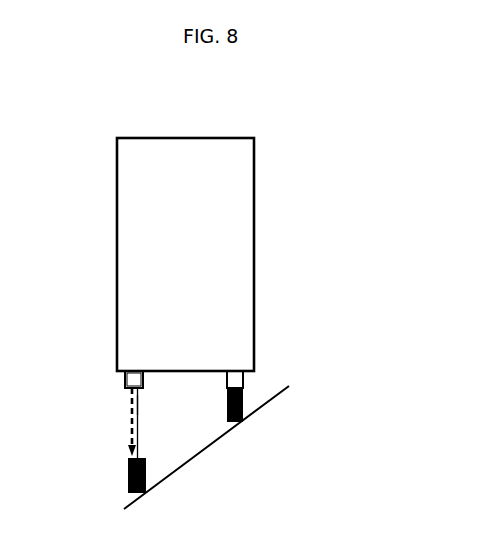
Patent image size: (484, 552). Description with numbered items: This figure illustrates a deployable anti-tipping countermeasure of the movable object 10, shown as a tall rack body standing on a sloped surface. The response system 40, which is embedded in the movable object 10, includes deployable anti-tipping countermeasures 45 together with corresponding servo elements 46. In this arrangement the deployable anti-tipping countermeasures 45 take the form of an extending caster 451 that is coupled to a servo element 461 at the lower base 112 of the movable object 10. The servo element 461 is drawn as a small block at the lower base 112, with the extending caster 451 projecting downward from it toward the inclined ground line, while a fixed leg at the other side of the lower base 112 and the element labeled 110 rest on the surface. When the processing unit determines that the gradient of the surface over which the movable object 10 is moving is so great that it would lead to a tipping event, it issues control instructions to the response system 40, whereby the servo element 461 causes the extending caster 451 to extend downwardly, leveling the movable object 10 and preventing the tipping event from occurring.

The movable object 10 is at (254, 240).
The servo element 46 is at (118, 380).
The servo element 461 is at (137, 372).
The lower base 112 is at (189, 371).
The response system 40 is at (117, 402).
The deployable anti-tipping countermeasures 45 is at (146, 405).
The front support leg 110 is at (128, 479).
The extending caster 451 is at (138, 433).